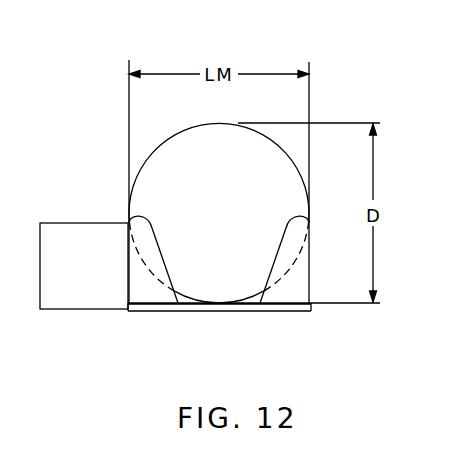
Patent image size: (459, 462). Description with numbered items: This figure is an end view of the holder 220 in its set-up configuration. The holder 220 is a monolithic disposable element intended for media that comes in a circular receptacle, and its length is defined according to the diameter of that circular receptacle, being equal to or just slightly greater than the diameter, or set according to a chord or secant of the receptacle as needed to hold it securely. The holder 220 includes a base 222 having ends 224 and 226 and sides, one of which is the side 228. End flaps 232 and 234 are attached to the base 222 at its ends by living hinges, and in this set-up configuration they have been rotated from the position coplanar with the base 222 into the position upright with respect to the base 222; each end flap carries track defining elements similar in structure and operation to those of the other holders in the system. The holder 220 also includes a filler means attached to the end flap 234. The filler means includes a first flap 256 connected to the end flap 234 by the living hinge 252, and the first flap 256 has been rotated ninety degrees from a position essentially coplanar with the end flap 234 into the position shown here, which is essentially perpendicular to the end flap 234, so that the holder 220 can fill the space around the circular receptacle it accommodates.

The holder 220 is at (75, 324).
The base 222 is at (215, 302).
The end 224 is at (127, 311).
The end 226 is at (311, 308).
The side 228 is at (260, 308).
The end flap 232 is at (306, 249).
The end flap 234 is at (158, 273).
The living hinge 252 is at (135, 241).
The first flap 256 is at (102, 280).